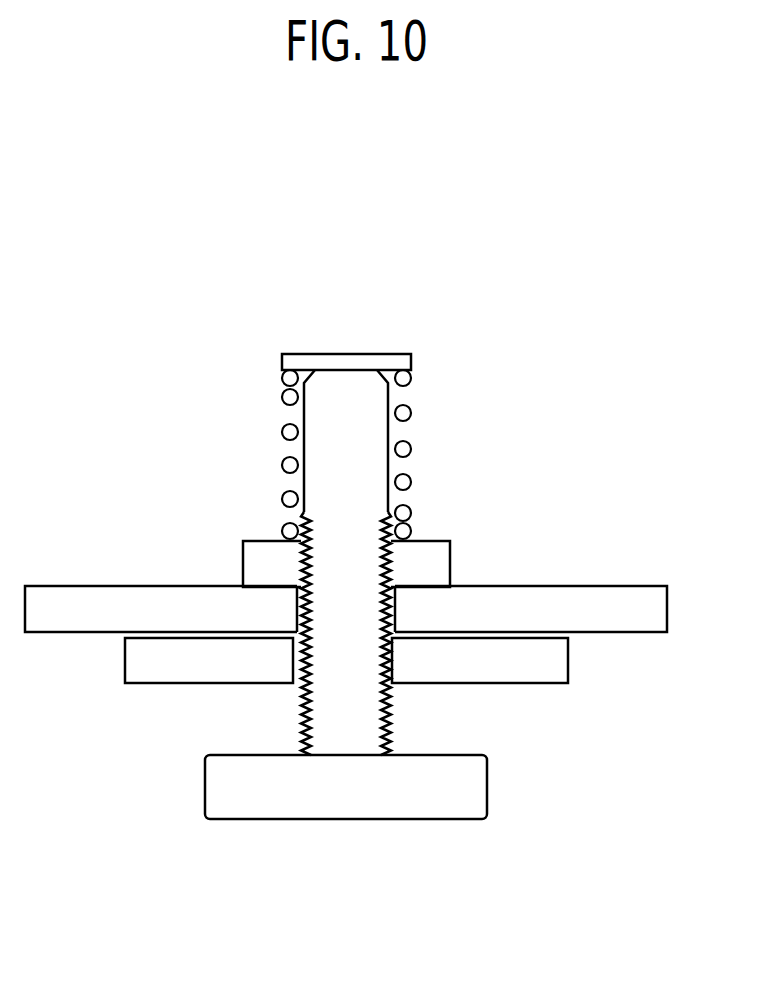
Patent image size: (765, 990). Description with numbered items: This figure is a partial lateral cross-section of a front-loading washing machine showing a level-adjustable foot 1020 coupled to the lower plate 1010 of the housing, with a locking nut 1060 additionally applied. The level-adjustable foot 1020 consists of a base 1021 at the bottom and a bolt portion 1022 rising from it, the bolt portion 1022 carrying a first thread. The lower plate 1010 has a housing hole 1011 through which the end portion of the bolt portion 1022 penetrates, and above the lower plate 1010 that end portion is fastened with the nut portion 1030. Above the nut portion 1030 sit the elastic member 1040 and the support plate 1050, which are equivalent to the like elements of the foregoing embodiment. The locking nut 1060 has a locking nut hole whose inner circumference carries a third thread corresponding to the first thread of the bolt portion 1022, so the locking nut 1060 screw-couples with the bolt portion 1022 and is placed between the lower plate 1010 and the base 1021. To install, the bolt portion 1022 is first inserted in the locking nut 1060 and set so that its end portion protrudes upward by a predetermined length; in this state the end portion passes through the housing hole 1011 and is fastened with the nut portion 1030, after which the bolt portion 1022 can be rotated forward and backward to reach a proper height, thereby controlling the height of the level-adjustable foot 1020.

The lower plate 1010 is at (645, 590).
The housing hole 1011 is at (395, 605).
The level-adjustable foot 1020 is at (258, 594).
The base 1021 is at (205, 797).
The bolt portion 1022 is at (320, 718).
The nut portion 1030 is at (243, 552).
The elastic member 1040 is at (273, 377).
The support plate 1050 is at (340, 357).
The locking nut 1060 is at (568, 665).